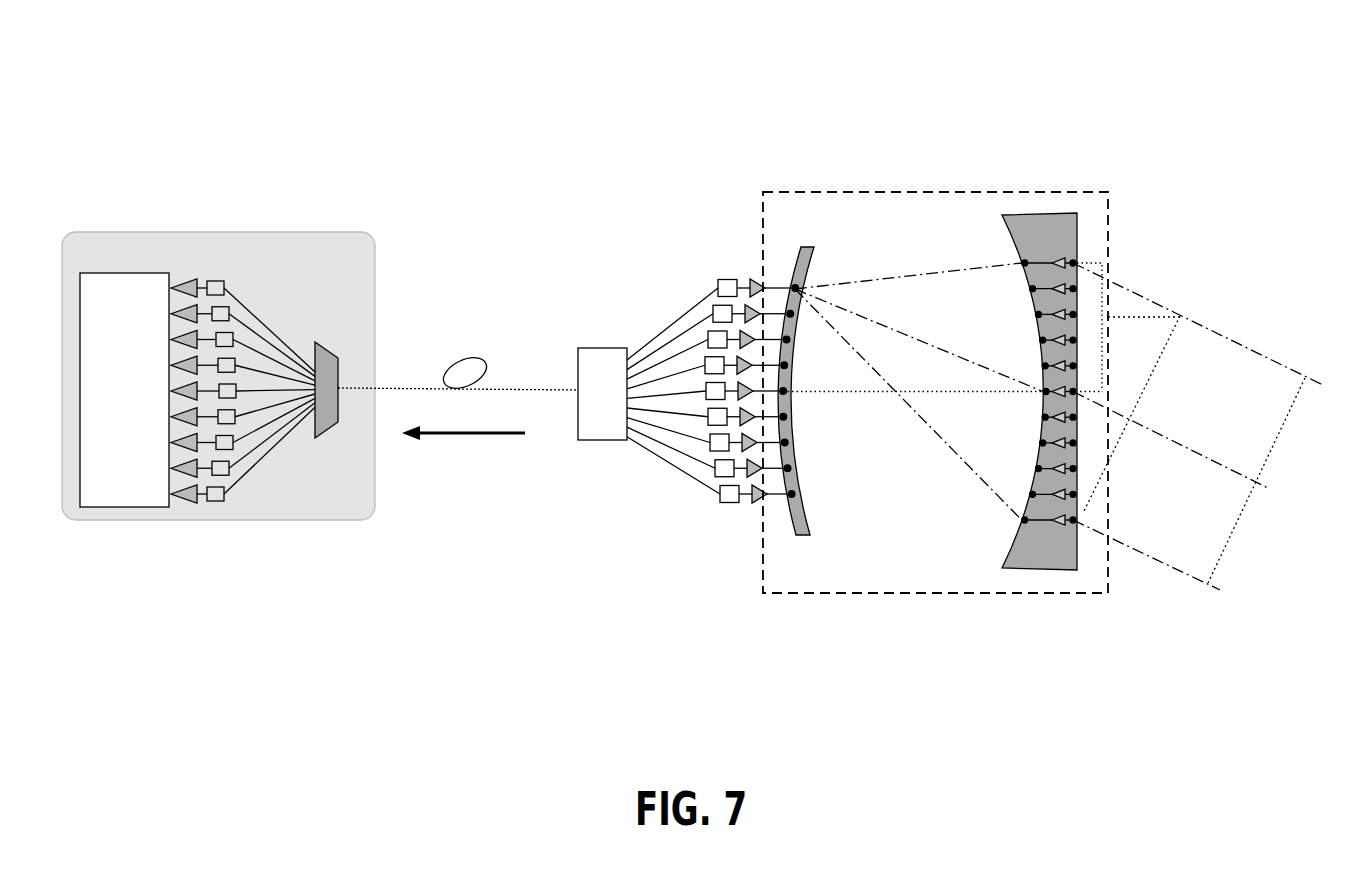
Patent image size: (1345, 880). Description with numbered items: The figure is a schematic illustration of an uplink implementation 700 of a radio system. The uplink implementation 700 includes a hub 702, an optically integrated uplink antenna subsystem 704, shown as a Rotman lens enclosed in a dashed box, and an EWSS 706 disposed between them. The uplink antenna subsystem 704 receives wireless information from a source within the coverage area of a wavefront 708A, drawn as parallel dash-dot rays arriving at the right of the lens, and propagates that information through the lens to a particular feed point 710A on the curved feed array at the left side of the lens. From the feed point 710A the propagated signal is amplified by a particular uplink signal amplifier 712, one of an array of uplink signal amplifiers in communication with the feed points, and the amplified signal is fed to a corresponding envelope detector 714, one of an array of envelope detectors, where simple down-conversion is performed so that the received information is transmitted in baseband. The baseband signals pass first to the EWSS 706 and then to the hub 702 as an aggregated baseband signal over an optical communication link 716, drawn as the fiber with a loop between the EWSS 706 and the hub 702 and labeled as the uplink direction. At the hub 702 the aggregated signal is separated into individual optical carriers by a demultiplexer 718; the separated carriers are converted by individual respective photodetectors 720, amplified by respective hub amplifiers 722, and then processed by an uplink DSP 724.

The uplink implementation 700 is at (1192, 98).
The hub 702 is at (327, 499).
The uplink antenna subsystem 704 is at (908, 192).
The EWSS 706 is at (588, 432).
The wavefront 708A is at (1295, 537).
The feed point 710A is at (812, 277).
The uplink signal amplifier 712 is at (746, 526).
The envelope detector 714 is at (727, 262).
The optical communication link 716 is at (473, 360).
The demultiplexer 718 is at (342, 367).
The photodetectors 720 is at (218, 530).
The hub amplifiers 722 is at (185, 516).
The uplink DSP 724 is at (127, 431).